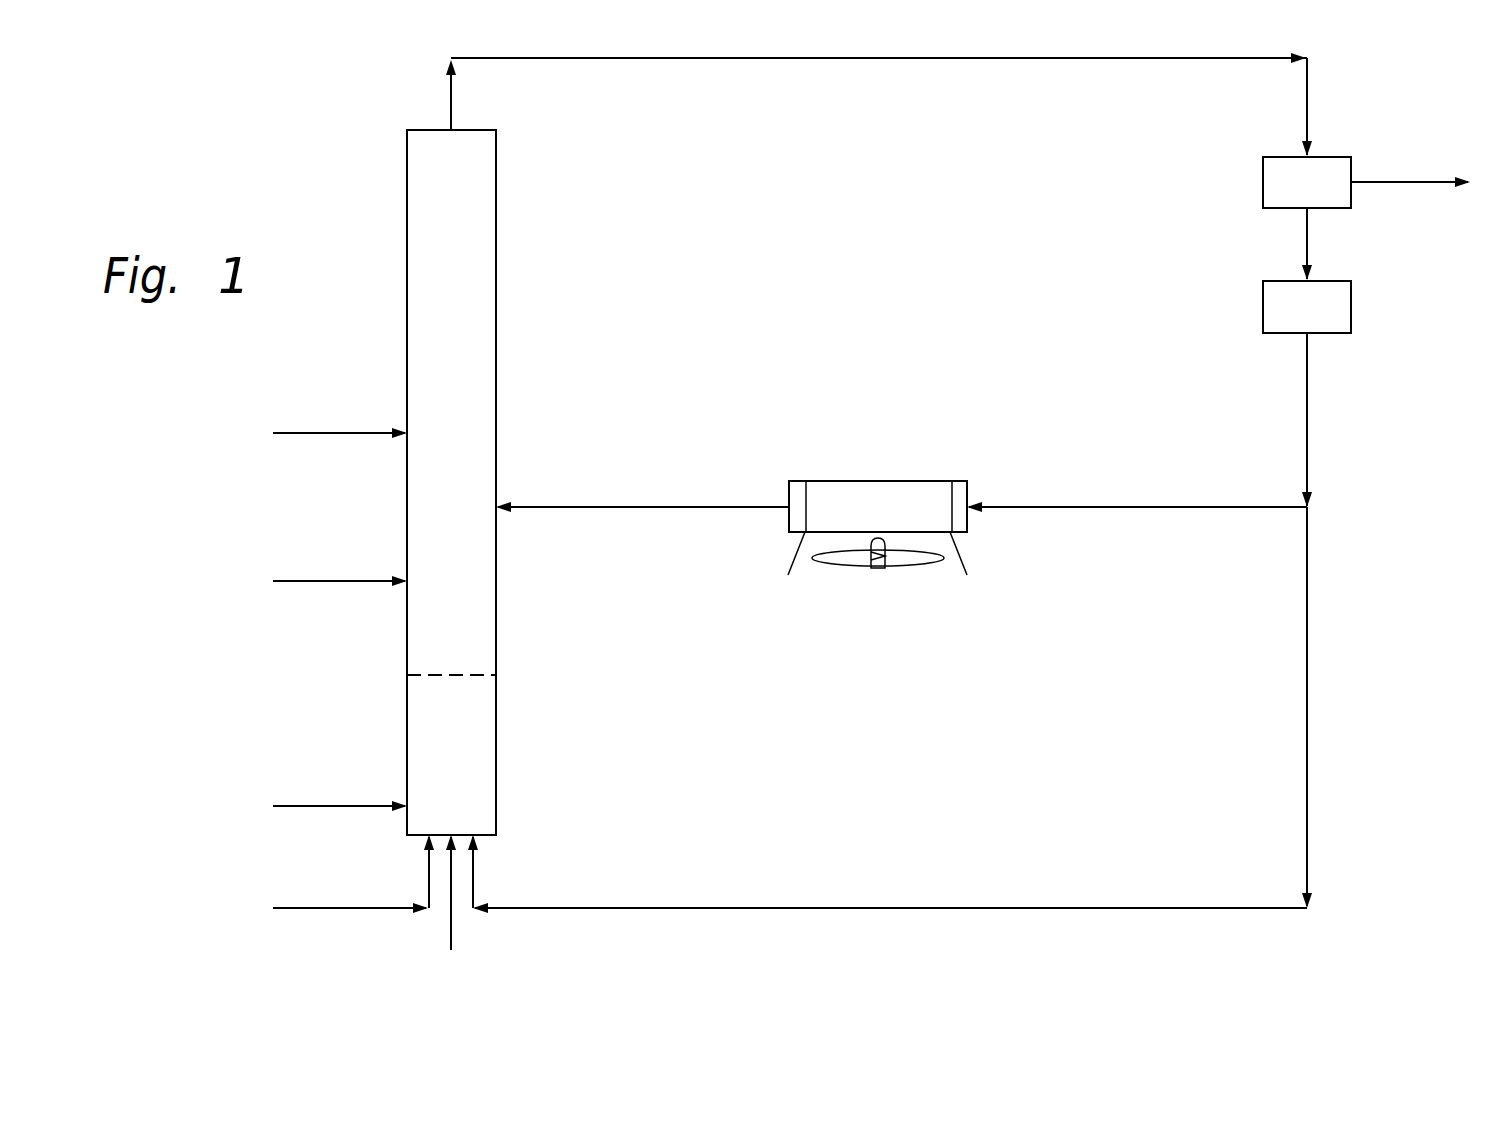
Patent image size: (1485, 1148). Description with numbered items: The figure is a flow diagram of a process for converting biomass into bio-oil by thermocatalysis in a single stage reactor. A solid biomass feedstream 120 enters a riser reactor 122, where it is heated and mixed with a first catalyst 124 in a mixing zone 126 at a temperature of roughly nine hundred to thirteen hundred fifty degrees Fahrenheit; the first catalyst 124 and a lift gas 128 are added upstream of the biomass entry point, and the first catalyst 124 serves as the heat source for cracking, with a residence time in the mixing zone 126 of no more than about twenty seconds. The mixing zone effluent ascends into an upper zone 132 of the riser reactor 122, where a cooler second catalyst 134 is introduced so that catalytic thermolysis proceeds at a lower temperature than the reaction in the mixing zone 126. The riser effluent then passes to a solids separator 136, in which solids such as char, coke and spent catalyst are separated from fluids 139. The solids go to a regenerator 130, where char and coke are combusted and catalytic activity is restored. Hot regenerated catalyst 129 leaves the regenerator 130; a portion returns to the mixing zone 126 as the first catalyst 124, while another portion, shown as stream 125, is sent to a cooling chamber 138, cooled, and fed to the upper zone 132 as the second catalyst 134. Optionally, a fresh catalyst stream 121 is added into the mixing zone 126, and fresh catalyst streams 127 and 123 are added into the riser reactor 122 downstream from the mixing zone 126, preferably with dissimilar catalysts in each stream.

The solid biomass feedstream 120 is at (316, 804).
The fresh catalyst stream 121 is at (453, 938).
The riser reactor 122 is at (473, 348).
The fresh catalyst stream 123 is at (316, 579).
The first catalyst 124 is at (594, 906).
The stream of hot regenerated catalyst to cooling chamber 125 is at (1205, 504).
The mixing zone 126 is at (482, 752).
The fresh catalyst stream 127 is at (316, 430).
The lift gas 128 is at (316, 906).
The hot regenerated catalyst 129 is at (1311, 461).
The regenerator 130 is at (1329, 322).
The upper zone 132 is at (421, 480).
The second catalyst 134 is at (594, 504).
The solids separator 136 is at (1329, 198).
The cooling chamber 138 is at (899, 518).
The fluids 139 is at (1411, 179).